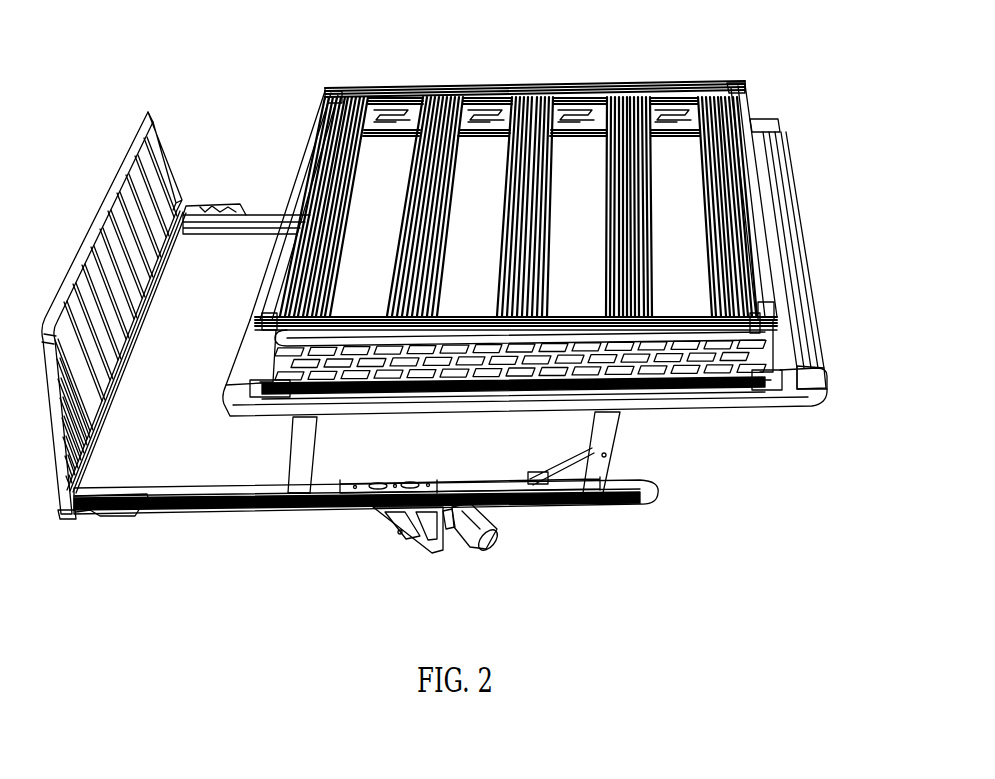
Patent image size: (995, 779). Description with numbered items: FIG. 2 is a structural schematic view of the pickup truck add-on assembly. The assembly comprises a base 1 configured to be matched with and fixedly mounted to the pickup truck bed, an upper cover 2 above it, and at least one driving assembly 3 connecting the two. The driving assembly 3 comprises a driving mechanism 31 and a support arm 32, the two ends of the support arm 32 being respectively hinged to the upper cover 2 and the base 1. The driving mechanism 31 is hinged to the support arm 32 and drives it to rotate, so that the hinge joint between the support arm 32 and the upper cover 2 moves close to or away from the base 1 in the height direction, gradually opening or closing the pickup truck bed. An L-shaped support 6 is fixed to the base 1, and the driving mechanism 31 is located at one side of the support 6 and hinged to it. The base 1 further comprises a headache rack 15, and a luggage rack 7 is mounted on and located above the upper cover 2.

The base 1 is at (404, 486).
The upper cover 2 is at (758, 127).
The driving assembly 3 is at (552, 560).
The support 6 is at (401, 531).
The luggage rack 7 is at (620, 82).
The headache rack 15 is at (122, 166).
The driving mechanism 31 is at (463, 535).
The support arm 32 is at (591, 486).